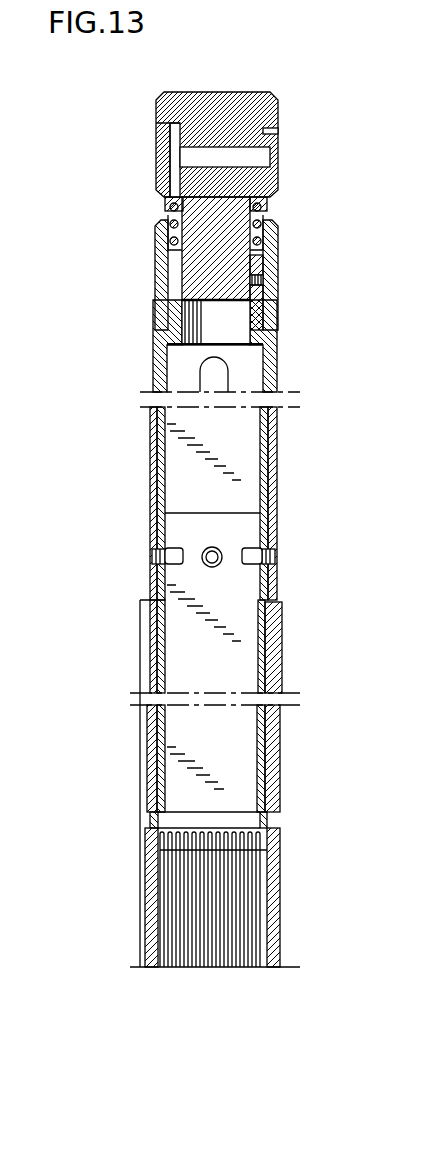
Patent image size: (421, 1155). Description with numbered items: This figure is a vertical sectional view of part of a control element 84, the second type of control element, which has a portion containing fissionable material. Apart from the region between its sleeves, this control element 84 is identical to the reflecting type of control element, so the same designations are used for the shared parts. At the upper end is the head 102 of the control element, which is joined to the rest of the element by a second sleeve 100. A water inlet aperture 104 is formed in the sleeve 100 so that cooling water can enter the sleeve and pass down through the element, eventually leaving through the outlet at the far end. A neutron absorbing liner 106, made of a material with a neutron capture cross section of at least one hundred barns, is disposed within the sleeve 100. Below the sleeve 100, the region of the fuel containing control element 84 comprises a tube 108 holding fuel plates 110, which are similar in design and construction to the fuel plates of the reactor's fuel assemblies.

The head 102 is at (284, 243).
The water inlet aperture 104 is at (160, 346).
The second sleeve 100 is at (160, 478).
The control element 84 is at (279, 512).
The neutron absorbing liner 106 is at (283, 626).
The tube 108 is at (281, 893).
The fuel plates 110 is at (238, 968).